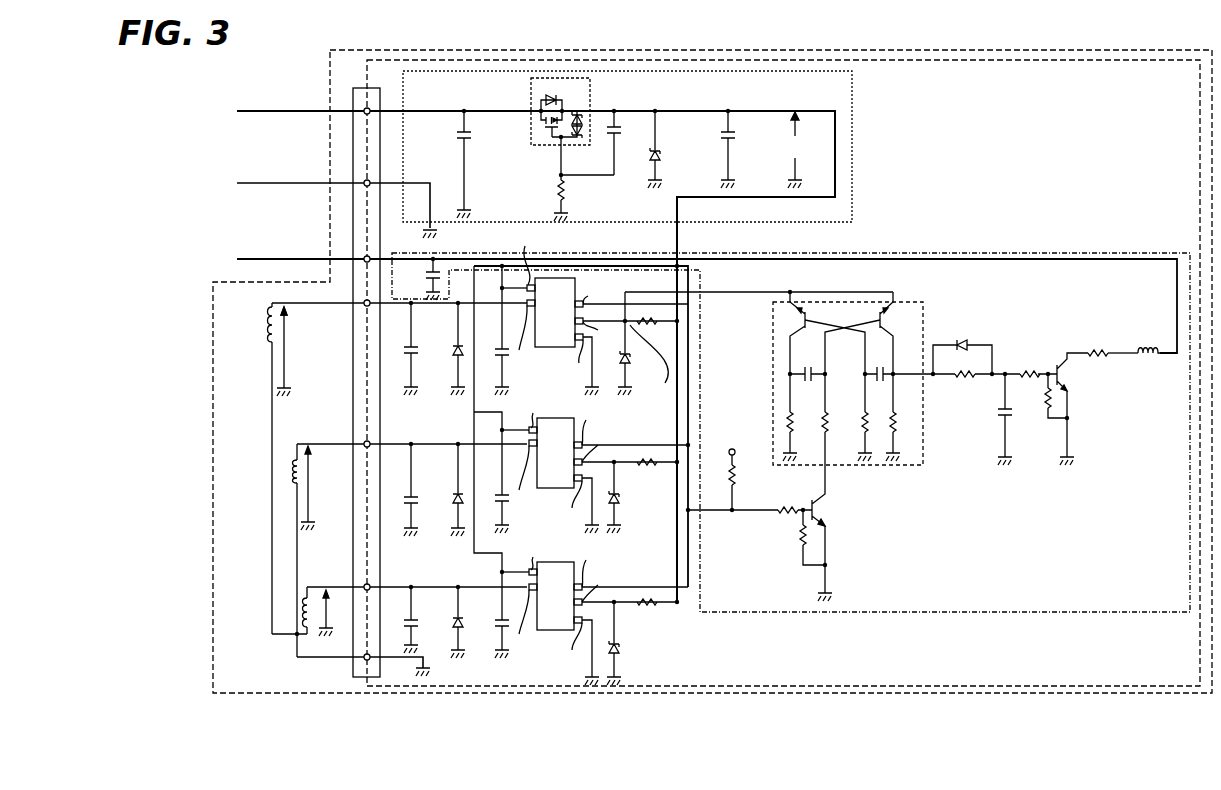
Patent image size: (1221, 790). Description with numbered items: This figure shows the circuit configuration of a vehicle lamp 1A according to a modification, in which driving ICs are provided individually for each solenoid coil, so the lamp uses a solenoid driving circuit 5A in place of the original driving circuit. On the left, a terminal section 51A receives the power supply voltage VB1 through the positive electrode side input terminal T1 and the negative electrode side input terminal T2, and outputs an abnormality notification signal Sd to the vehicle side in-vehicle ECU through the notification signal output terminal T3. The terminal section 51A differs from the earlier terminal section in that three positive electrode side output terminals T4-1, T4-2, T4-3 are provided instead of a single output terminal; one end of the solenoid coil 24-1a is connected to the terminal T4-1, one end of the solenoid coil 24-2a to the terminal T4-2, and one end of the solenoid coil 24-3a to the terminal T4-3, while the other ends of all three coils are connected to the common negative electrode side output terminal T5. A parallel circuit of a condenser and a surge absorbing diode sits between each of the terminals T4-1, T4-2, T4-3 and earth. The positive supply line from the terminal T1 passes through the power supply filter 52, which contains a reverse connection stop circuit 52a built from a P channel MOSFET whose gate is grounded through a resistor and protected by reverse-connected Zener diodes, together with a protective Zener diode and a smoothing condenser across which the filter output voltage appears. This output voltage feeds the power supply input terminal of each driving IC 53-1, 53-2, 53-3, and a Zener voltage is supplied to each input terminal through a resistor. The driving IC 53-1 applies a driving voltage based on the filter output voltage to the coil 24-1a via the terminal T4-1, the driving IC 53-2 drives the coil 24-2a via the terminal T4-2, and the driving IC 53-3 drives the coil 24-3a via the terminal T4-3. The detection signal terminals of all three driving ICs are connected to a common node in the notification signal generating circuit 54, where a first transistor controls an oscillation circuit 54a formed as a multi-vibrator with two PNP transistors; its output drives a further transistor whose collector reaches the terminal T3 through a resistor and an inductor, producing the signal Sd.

The vehicle lamp 1A is at (1030, 695).
The solenoid driving circuit 5A is at (875, 688).
The solenoid coil 24-1a is at (270, 338).
The solenoid coil 24-2a is at (295, 468).
The solenoid coil 24-3a is at (305, 612).
The terminal section 51A is at (352, 643).
The power supply filter 52 is at (852, 140).
The reverse connection stop circuit 52a is at (590, 78).
The driving IC 53-1 is at (555, 347).
The driving IC 53-2 is at (548, 418).
The driving IC 53-3 is at (545, 630).
The notification signal generating circuit 54 is at (905, 612).
The oscillation circuit 54a is at (923, 462).
The positive electrode side input terminal T1 is at (362, 108).
The negative electrode side input terminal T2 is at (362, 181).
The notification signal output terminal T3 is at (362, 257).
The positive electrode side output terminal T4-1 is at (363, 305).
The positive electrode side output terminal T4-2 is at (364, 445).
The positive electrode side output terminal T4-3 is at (364, 588).
The negative electrode side output terminal T5 is at (364, 658).
The power supply voltage VB1 is at (260, 110).
The abnormality notification signal Sd is at (282, 258).
The detection signal line Sn is at (718, 515).